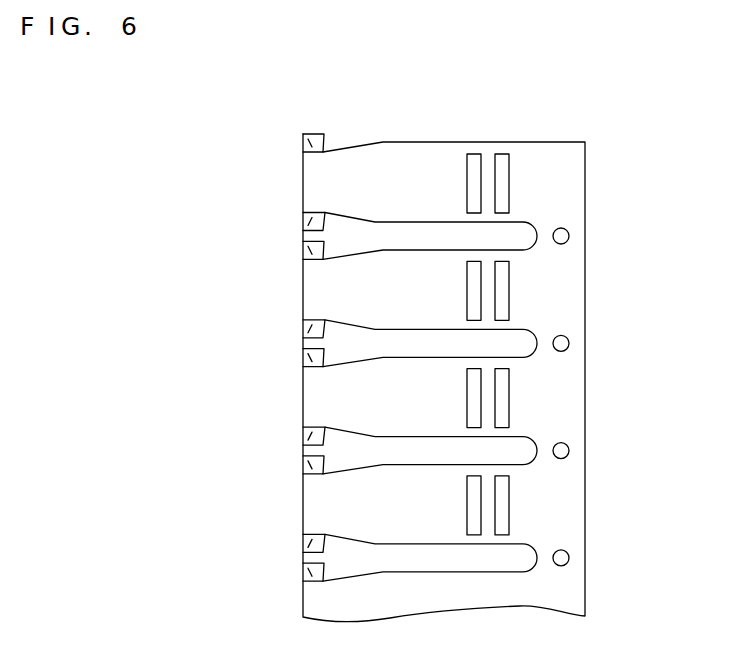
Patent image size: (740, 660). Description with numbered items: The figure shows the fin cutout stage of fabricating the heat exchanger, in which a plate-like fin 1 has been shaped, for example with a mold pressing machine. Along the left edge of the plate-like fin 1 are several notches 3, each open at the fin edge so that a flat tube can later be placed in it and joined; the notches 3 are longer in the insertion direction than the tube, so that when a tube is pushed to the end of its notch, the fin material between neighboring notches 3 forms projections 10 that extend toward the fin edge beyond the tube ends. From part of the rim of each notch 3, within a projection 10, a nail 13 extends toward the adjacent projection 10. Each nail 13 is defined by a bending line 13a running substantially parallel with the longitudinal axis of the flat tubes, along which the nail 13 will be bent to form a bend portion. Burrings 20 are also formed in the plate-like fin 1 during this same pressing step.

The plate-like fin 1 is at (540, 142).
The notch 3 is at (426, 236).
The projection 10 is at (347, 180).
The nail 13 is at (303, 134).
The bending line 13a is at (303, 156).
The burring 20 is at (570, 236).